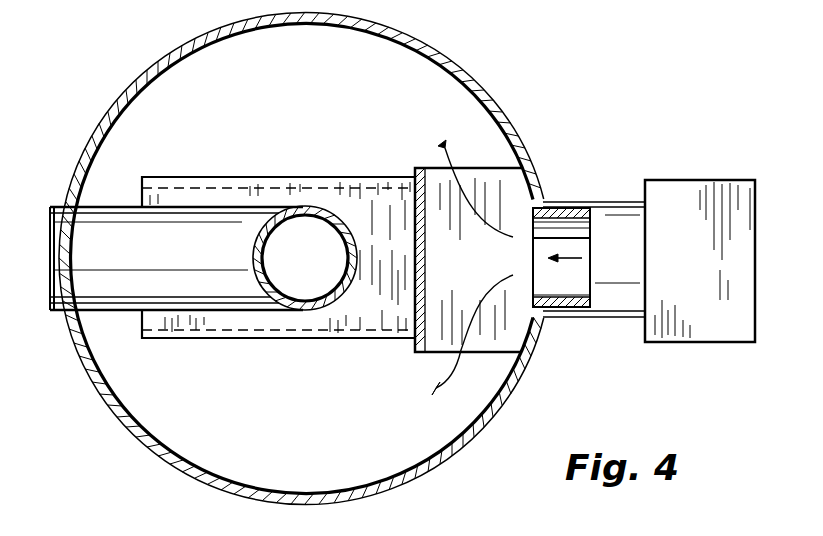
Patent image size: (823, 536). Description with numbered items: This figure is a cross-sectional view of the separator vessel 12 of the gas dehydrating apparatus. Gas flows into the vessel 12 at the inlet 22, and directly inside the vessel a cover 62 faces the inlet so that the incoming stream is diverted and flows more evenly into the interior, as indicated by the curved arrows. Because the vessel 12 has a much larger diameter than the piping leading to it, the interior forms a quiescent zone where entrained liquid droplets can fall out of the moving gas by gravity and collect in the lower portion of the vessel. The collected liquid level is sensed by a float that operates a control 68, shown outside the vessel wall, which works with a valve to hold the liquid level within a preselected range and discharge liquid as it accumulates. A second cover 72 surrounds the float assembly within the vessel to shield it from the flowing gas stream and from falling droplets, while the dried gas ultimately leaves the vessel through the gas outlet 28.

The separator vessel 12 is at (195, 478).
The inlet 22 is at (560, 208).
The gas outlet 28 is at (48, 306).
The cover 62 is at (415, 318).
The control 68 is at (706, 190).
The cover 72 is at (345, 338).